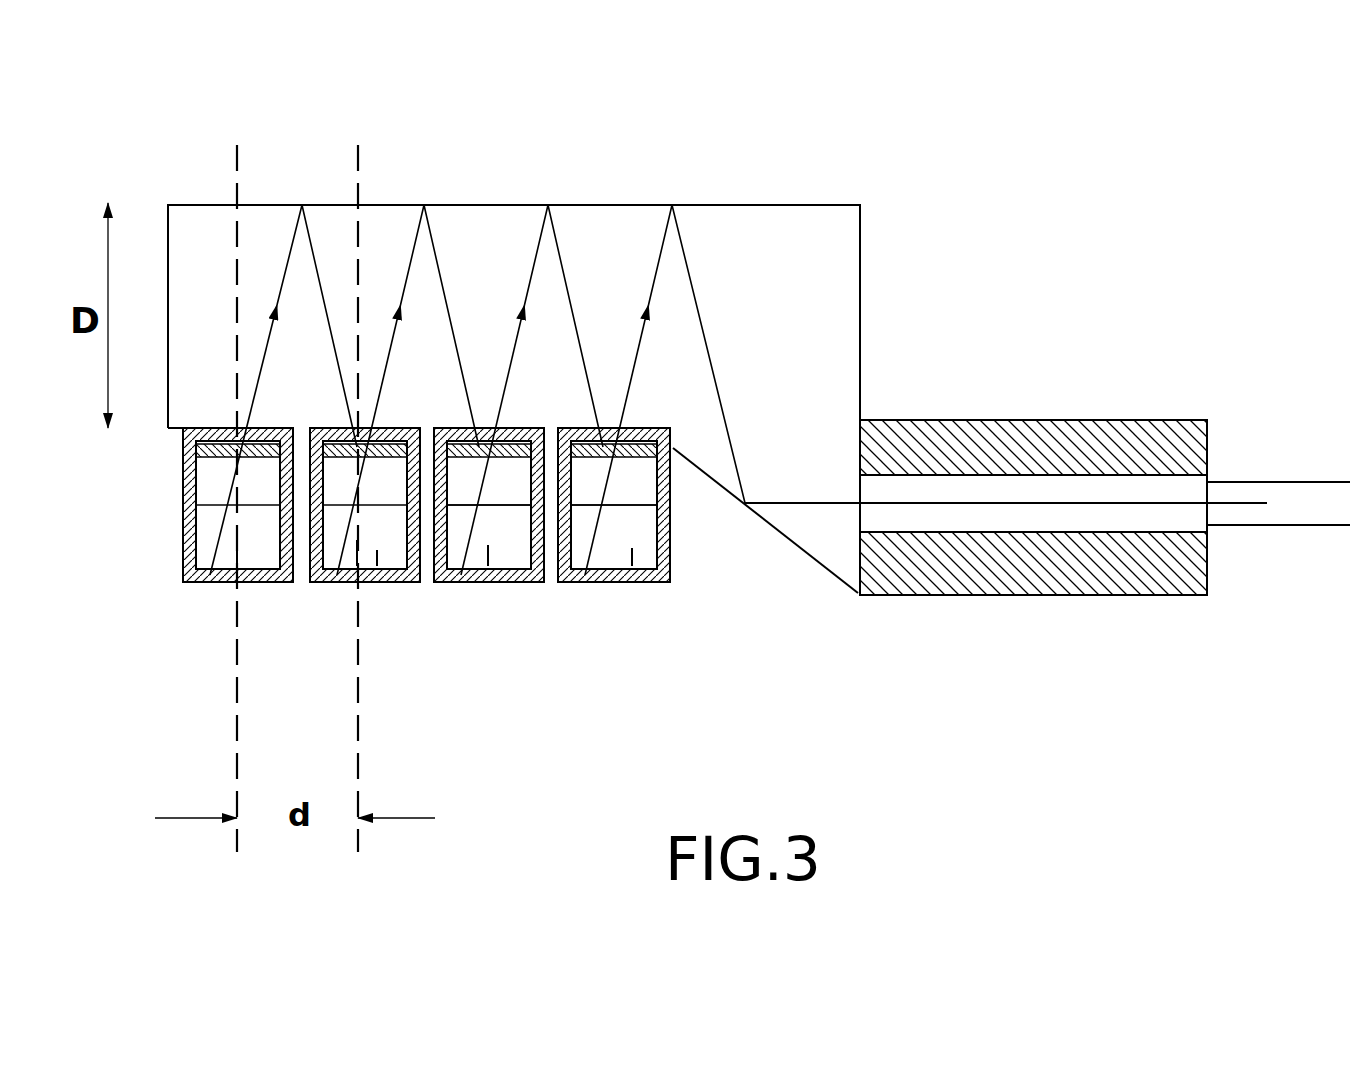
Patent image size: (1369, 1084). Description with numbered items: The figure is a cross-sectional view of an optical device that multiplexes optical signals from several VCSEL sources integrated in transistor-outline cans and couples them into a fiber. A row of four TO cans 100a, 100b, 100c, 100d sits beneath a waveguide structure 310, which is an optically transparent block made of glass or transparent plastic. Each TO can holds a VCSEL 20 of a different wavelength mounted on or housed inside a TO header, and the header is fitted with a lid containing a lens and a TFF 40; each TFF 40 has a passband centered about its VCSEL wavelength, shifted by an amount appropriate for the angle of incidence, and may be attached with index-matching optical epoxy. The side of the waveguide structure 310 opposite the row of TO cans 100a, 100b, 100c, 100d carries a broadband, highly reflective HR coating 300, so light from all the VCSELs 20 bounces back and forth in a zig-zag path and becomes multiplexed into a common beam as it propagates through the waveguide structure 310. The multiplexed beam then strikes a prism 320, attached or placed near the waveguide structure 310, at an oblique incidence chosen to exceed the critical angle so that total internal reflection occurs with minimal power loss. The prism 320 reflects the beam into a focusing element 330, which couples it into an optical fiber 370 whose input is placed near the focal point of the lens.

The HR coating 300 is at (701, 405).
The waveguide structure 310 is at (800, 263).
The prism 320 is at (820, 466).
The focusing element 330 is at (1037, 447).
The optical fiber 370 is at (1247, 492).
The TO can 100a is at (210, 543).
The TO can 100b is at (380, 583).
The TO can 100c is at (490, 583).
The TO can 100d is at (643, 583).
The VCSEL 20 is at (197, 588).
The TFF 40 is at (497, 487).